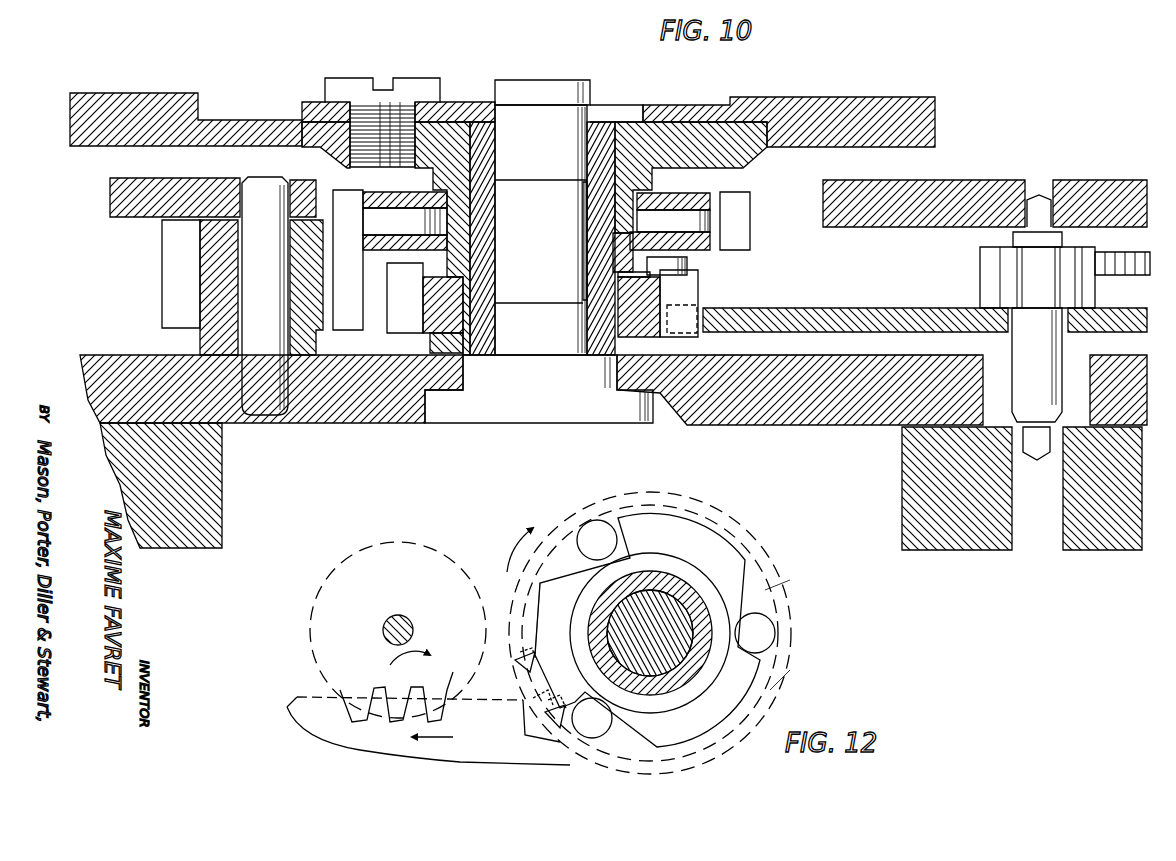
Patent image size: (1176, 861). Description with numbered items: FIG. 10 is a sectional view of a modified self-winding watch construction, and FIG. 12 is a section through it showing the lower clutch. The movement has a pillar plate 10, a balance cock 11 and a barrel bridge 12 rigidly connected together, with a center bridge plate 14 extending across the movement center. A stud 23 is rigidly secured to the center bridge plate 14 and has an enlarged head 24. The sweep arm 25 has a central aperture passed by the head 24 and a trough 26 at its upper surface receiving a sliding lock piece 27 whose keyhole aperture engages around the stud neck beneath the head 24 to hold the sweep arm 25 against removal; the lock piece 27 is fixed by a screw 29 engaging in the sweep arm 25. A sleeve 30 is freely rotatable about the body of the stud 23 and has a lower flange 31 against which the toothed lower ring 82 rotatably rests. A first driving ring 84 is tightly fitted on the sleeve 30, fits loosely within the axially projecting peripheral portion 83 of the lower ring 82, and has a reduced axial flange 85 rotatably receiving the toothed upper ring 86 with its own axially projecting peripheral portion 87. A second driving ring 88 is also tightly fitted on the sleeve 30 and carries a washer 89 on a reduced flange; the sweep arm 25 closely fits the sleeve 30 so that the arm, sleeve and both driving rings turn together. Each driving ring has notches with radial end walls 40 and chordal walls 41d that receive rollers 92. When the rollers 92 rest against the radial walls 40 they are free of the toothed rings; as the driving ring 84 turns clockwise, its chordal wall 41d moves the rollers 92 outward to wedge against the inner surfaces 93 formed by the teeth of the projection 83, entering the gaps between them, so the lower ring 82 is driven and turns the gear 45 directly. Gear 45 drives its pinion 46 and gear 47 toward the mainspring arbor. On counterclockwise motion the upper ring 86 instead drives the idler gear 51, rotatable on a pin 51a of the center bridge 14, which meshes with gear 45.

In FIG. 10, the pillar plate 10 is at (213, 462).
In FIG. 10, the balance cock 11 is at (220, 218).
In FIG. 10, the barrel bridge 12 is at (1005, 200).
In FIG. 10, the center bridge plate 14 is at (825, 412).
In FIG. 10, the stud 23 is at (541, 230).
In FIG. 12, the stud 23 is at (670, 605).
In FIG. 10, the enlarged head 24 is at (538, 93).
In FIG. 10, the sweep arm 25 is at (800, 100).
In FIG. 10, the trough 26 is at (268, 107).
In FIG. 10, the sliding lock piece 27 is at (462, 104).
In FIG. 10, the screw 29 is at (405, 90).
In FIG. 10, the sleeve 30 is at (493, 268).
In FIG. 12, the sleeve 30 is at (663, 577).
In FIG. 10, the lower flange 31 is at (483, 357).
In FIG. 12, the radial end walls 40 is at (618, 518).
In FIG. 12, the chordal wall 41d is at (780, 570).
In FIG. 10, the gear 45 is at (890, 311).
In FIG. 12, the gear 45 is at (320, 717).
In FIG. 10, the pinion 46 is at (990, 296).
In FIG. 10, the gear 47 is at (1140, 270).
In FIG. 10, the idler gear 51 is at (207, 258).
In FIG. 12, the idler gear 51 is at (432, 585).
In FIG. 10, the pin 51a is at (243, 340).
In FIG. 12, the pin 51a is at (395, 615).
In FIG. 10, the toothed lower ring 82 is at (660, 330).
In FIG. 12, the toothed lower ring 82 is at (760, 597).
In FIG. 10, the axially projecting peripheral portion 83 is at (685, 296).
In FIG. 12, the axially projecting peripheral portion 83 is at (770, 685).
In FIG. 10, the first driving ring 84 is at (618, 249).
In FIG. 12, the first driving ring 84 is at (730, 562).
In FIG. 12, the reduced axial flange 85 is at (687, 692).
In FIG. 10, the toothed upper ring 86 is at (705, 245).
In FIG. 10, the axially projecting peripheral portion 87 is at (740, 225).
In FIG. 10, the second driving ring 88 is at (597, 195).
In FIG. 10, the washer 89 is at (700, 208).
In FIG. 10, the rollers 92 is at (690, 203).
In FIG. 12, the rollers 92 is at (805, 628).
In FIG. 12, the inner surfaces 93 is at (518, 668).